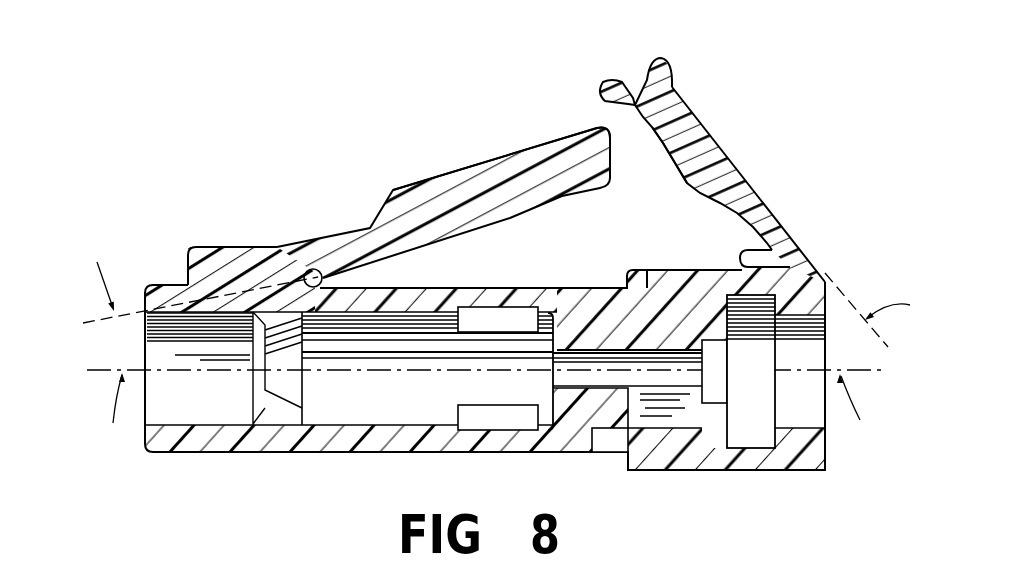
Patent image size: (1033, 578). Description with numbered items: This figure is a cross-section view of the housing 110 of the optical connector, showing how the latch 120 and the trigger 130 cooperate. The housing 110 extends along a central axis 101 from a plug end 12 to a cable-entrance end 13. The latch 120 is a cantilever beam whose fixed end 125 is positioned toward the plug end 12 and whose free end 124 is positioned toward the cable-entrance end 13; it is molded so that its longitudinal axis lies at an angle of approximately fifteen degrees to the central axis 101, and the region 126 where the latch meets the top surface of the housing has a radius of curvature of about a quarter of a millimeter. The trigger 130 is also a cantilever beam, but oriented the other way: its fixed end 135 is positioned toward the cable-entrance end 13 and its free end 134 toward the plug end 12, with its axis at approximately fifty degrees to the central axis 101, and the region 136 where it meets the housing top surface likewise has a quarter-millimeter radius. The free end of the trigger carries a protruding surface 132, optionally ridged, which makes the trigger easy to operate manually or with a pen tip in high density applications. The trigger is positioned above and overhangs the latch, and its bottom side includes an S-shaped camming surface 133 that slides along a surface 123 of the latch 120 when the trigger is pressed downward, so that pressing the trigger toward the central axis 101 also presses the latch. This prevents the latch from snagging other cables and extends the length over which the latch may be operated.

The housing 110 is at (345, 127).
The plug end 12 is at (143, 430).
The cable-entrance end 13 is at (832, 438).
The central axis 101 is at (402, 373).
The latch 120 is at (465, 170).
The surface of the latch 123 is at (595, 120).
The free end of the latch 124 is at (560, 150).
The fixed end of the latch 125 is at (262, 247).
The region where latch meets housing 126 is at (316, 266).
The trigger 130 is at (730, 150).
The protruding surface 132 is at (658, 65).
The camming surface 133 is at (633, 98).
The free end of the trigger 134 is at (690, 105).
The fixed end of the trigger 135 is at (807, 253).
The region where trigger meets housing 136 is at (752, 262).